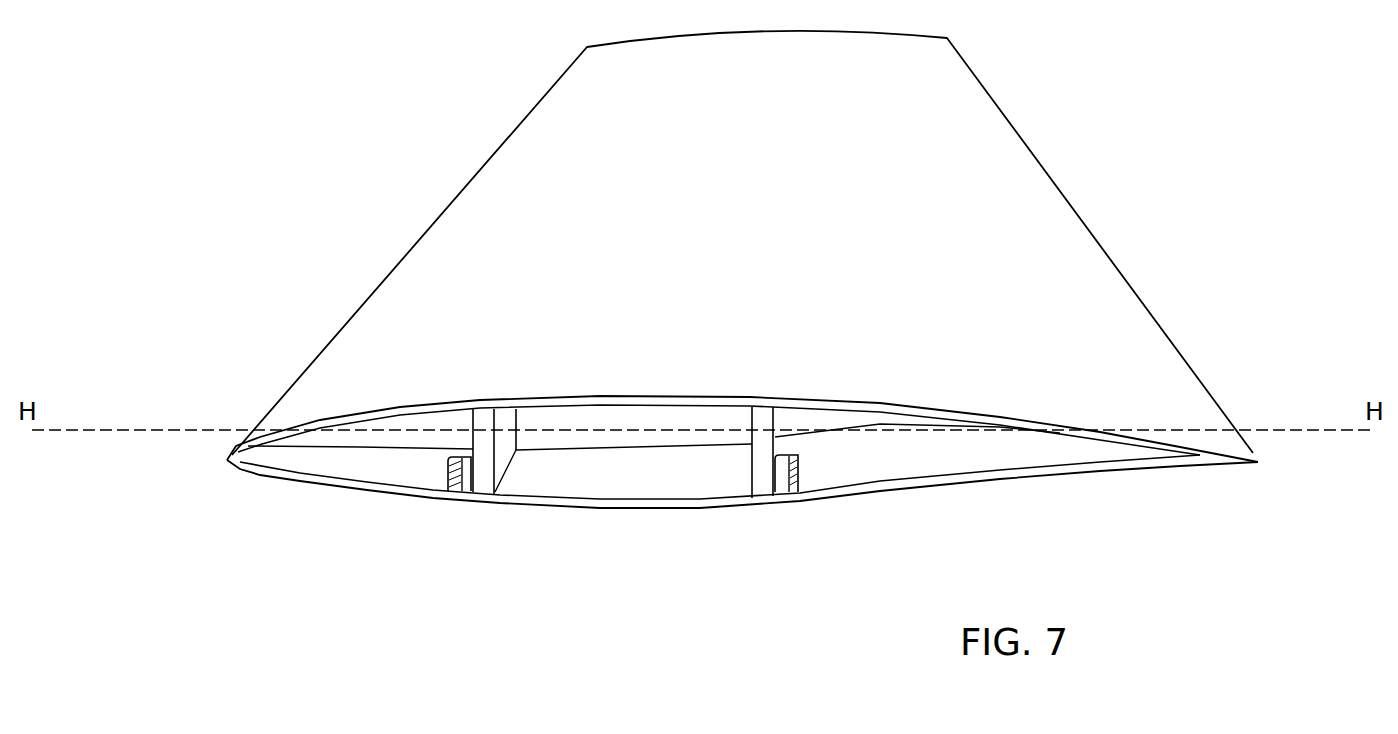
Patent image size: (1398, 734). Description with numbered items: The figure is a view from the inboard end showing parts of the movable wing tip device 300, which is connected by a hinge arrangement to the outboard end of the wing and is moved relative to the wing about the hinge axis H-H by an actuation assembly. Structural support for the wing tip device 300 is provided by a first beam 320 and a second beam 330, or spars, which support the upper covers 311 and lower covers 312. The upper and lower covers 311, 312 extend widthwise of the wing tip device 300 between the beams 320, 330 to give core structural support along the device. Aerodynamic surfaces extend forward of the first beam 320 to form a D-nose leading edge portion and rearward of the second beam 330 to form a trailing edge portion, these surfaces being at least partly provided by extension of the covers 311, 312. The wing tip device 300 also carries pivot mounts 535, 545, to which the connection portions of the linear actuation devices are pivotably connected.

The wing tip device 300 is at (741, 125).
The upper covers 311 is at (650, 405).
The lower covers 312 is at (697, 498).
The first beam 320 is at (487, 408).
The second beam 330 is at (760, 415).
The pivot mount 535 is at (798, 470).
The pivot mount 545 is at (466, 483).